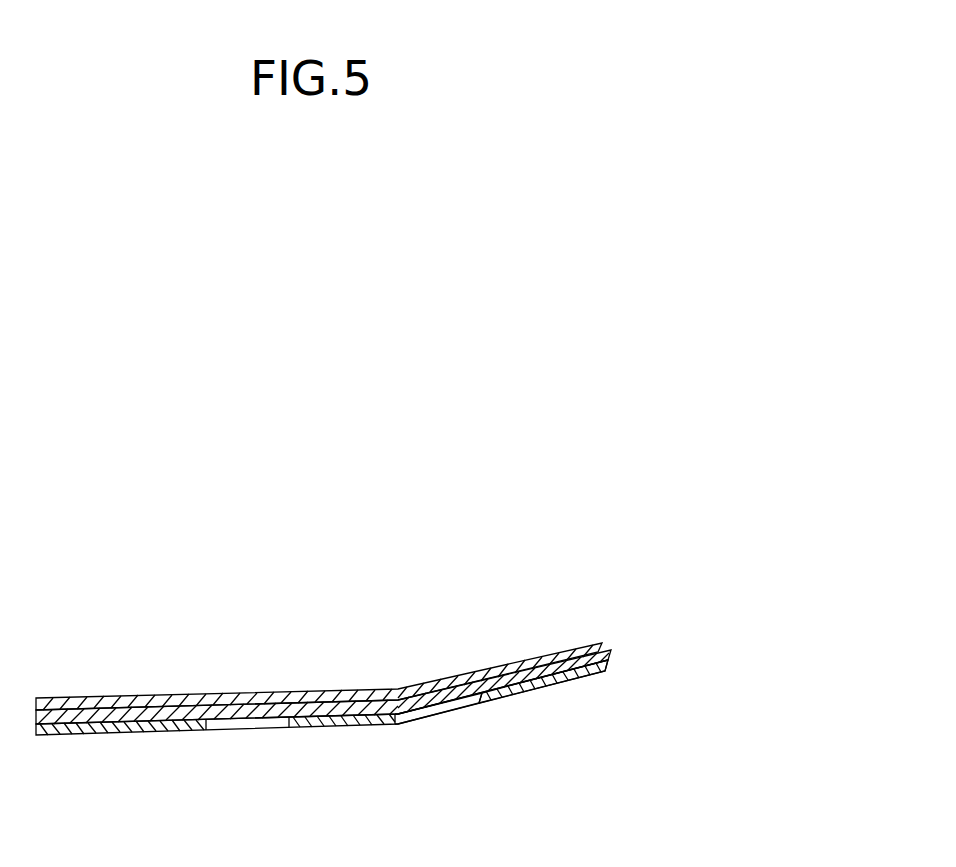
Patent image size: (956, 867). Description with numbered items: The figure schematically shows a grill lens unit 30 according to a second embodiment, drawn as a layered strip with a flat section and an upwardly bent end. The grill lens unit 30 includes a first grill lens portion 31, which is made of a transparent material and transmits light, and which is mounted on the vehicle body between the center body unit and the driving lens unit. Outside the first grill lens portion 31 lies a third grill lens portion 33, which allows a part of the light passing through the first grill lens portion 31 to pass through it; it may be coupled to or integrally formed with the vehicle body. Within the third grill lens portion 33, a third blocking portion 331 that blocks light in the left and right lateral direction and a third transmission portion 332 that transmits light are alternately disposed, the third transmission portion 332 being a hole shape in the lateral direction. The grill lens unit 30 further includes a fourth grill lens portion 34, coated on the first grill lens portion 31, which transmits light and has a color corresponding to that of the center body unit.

The grill lens unit 30 is at (600, 395).
The first grill lens portion 31 is at (612, 651).
The third grill lens portion 33 is at (322, 750).
The third blocking portion 331 is at (546, 688).
The third transmission portion 332 is at (443, 710).
The fourth grill lens portion 34 is at (128, 700).